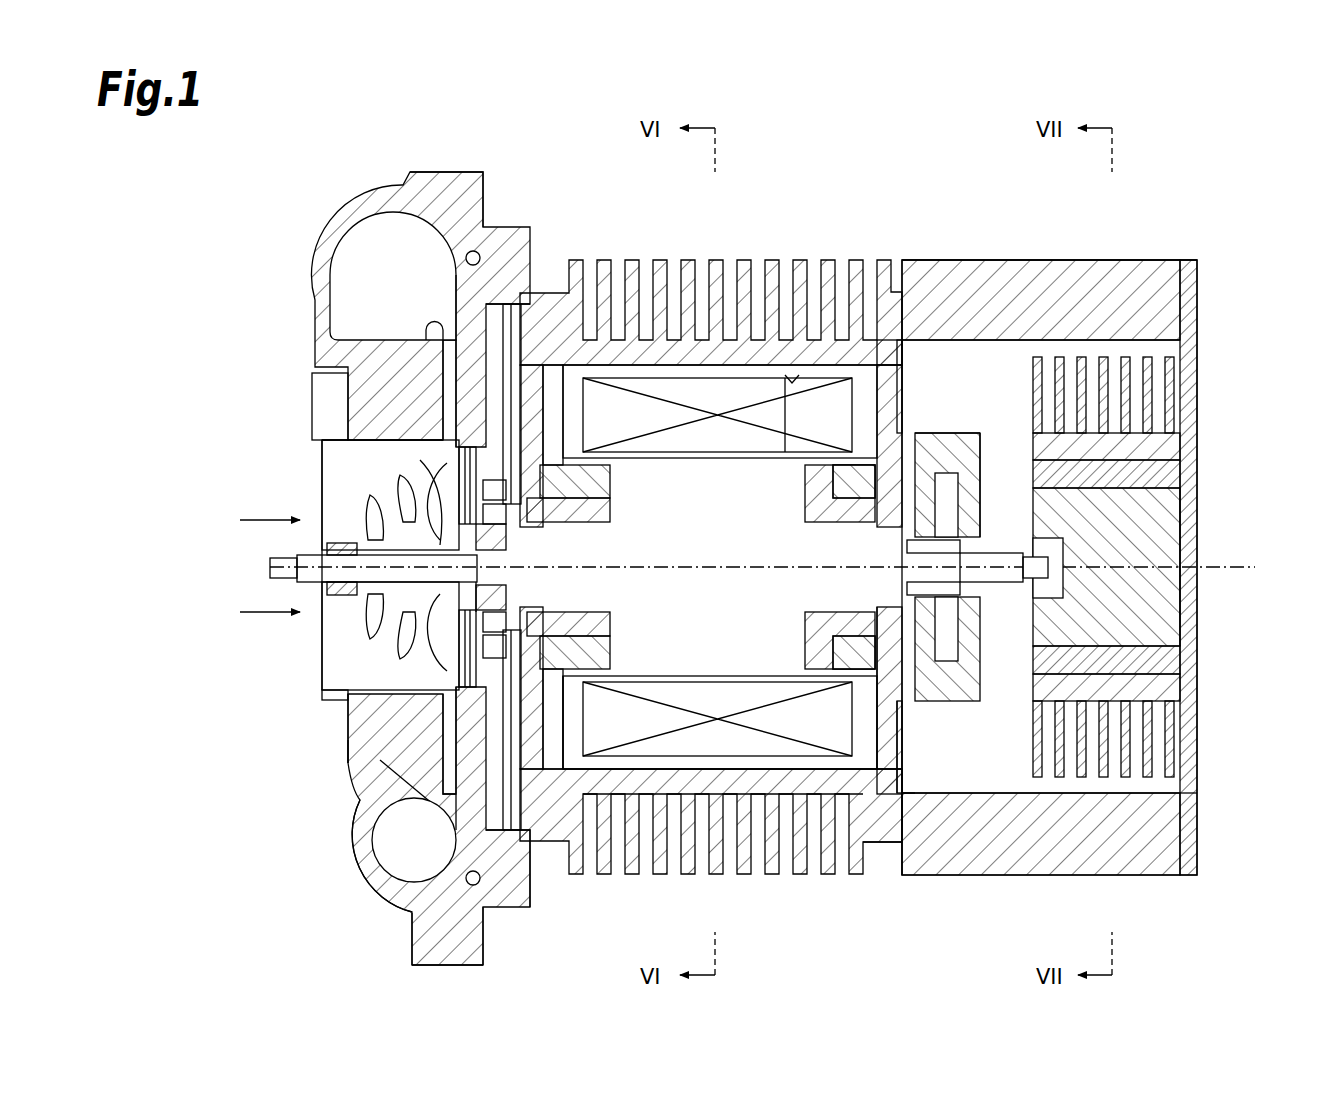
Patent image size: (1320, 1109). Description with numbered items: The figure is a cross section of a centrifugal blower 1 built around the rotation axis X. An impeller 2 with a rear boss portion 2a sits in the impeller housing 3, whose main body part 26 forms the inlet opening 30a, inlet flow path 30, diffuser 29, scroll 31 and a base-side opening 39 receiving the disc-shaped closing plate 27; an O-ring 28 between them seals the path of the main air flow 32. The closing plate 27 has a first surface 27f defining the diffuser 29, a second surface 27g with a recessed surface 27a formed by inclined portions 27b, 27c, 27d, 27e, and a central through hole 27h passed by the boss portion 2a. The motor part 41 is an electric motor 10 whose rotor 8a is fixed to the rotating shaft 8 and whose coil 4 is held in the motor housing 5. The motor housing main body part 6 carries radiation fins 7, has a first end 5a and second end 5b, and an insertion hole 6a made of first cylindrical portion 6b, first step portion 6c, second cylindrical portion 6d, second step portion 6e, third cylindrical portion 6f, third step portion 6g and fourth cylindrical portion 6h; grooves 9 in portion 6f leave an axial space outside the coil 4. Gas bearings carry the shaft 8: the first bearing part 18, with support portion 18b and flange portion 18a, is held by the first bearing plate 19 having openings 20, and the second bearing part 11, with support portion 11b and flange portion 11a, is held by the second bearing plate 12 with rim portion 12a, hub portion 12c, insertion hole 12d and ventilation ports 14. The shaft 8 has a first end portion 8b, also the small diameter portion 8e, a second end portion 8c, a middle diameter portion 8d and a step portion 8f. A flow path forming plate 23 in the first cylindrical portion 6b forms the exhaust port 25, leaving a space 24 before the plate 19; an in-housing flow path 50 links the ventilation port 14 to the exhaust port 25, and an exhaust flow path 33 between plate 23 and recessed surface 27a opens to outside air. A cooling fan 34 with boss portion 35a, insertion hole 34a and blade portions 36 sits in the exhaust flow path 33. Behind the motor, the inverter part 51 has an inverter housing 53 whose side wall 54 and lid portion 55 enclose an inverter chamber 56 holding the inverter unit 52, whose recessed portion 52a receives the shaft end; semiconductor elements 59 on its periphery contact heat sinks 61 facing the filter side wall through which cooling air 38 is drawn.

The centrifugal blower 1 is at (920, 205).
The impeller 2 is at (350, 620).
The boss portion 2a is at (495, 545).
The impeller housing 3 is at (340, 205).
The coil 4 is at (905, 745).
The motor housing 5 is at (920, 835).
The first end 5a is at (420, 880).
The second end 5b is at (890, 830).
The motor housing main body part 6 is at (876, 300).
The insertion hole 6a is at (870, 713).
The first cylindrical portion 6b is at (470, 830).
The first step portion 6c is at (440, 810).
The second cylindrical portion 6d is at (600, 330).
The second step portion 6e is at (560, 800).
The third cylindrical portion 6f is at (792, 378).
The third step portion 6g is at (890, 800).
The fourth cylindrical portion 6h is at (898, 400).
The radiation fins 7 is at (786, 860).
The rotating shaft 8 is at (1040, 540).
The rotor 8a is at (790, 445).
The first end portion 8b is at (330, 548).
The second end portion 8c is at (1000, 598).
The tip end-side middle diameter portion 8d is at (380, 700).
The tip end-side small diameter portion 8e is at (345, 665).
The step portion 8f is at (345, 740).
The groove 9 is at (700, 765).
The electric motor 10 is at (690, 793).
The second bearing part 11 is at (805, 620).
The flange portion 11a is at (805, 480).
The support portion 11b is at (960, 470).
The second bearing plate 12 is at (920, 435).
The rim portion 12a is at (905, 790).
The hub portion 12c is at (925, 440).
The insertion hole 12d is at (965, 650).
The ventilation port 14 is at (905, 350).
The first bearing part 18 is at (615, 625).
The flange portion 18a is at (610, 480).
The support portion 18b is at (610, 512).
The first bearing plate 19 is at (600, 740).
The opening 20 is at (590, 432).
The flow path forming plate 23 is at (400, 830).
The space 24 is at (560, 717).
The exhaust port 25 is at (520, 600).
The impeller housing main body part 26 is at (415, 940).
The closing plate 27 is at (500, 185).
The recessed surface 27a is at (500, 905).
The first inclined portion 27b is at (530, 245).
The second inclined portion 27c is at (450, 300).
The third inclined portion 27d is at (430, 330).
The fourth inclined portion 27e is at (470, 450).
The first surface 27f is at (330, 395).
The second surface 27g is at (520, 880).
The through hole 27h is at (435, 530).
The O-ring 28 is at (465, 258).
The diffuser 29 is at (440, 790).
The inlet flow path 30 is at (358, 510).
The opening 30a is at (322, 505).
The scroll 31 is at (355, 262).
The main air flow 32 is at (245, 512).
The exhaust flow path 33 is at (440, 370).
The cooling fan 34 is at (460, 405).
The insertion hole 34a is at (470, 590).
The boss portion 35a is at (520, 520).
The blade portions 36 is at (420, 770).
The cooling air 38 is at (1043, 338).
The opening 39 is at (480, 885).
The motor part 41 is at (762, 300).
The in-housing flow path 50 is at (590, 360).
The inverter part 51 is at (1040, 212).
The inverter unit 52 is at (1178, 522).
The recessed portion 52a is at (1170, 600).
The inverter housing 53 is at (1270, 840).
The side wall 54 is at (1180, 870).
The lid portion 55 is at (1140, 810).
The inverter chamber 56 is at (980, 370).
The semiconductor element 59 is at (1150, 470).
The heat sink 61 is at (1150, 395).
The rotation axis X is at (1255, 567).